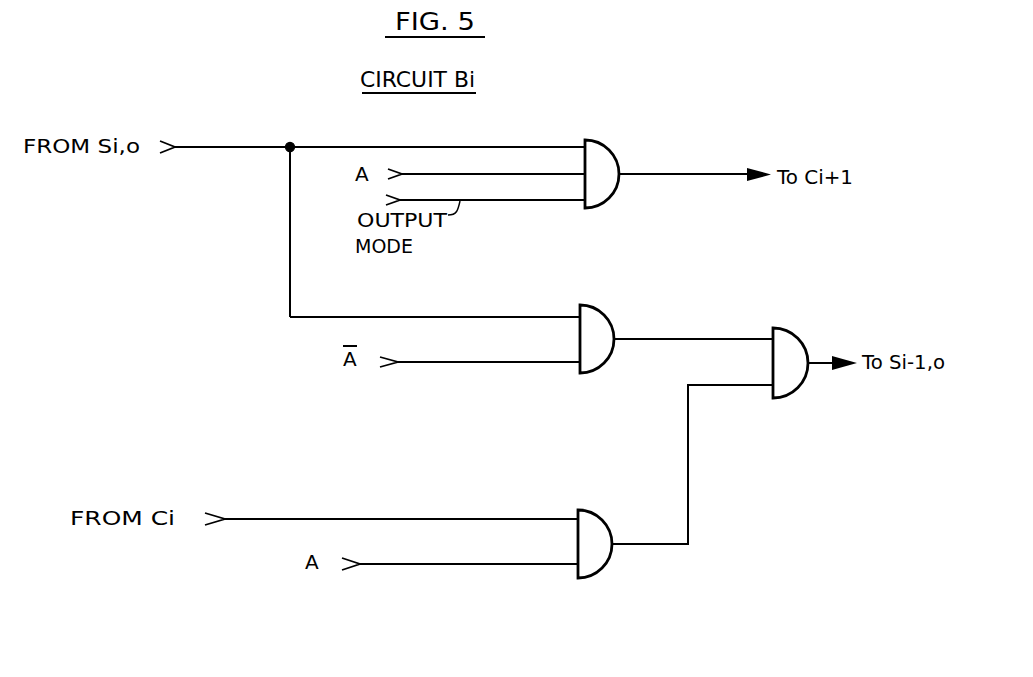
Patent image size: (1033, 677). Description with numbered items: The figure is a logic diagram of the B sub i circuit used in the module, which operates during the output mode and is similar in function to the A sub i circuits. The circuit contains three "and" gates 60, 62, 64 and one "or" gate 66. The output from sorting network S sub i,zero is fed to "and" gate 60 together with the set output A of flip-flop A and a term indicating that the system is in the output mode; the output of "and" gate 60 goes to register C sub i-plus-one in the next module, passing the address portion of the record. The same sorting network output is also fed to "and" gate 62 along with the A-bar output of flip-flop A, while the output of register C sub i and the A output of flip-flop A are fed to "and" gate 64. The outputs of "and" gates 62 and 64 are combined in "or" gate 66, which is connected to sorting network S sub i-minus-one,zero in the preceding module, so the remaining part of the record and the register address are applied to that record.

The "and" gate 60 is at (598, 158).
The "and" gate 62 is at (599, 333).
The "and" gate 64 is at (592, 528).
The "or" gate 66 is at (793, 352).